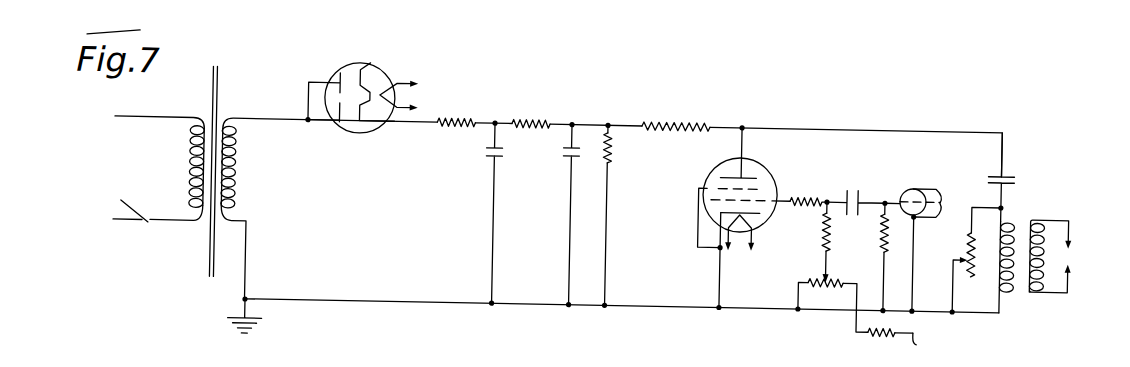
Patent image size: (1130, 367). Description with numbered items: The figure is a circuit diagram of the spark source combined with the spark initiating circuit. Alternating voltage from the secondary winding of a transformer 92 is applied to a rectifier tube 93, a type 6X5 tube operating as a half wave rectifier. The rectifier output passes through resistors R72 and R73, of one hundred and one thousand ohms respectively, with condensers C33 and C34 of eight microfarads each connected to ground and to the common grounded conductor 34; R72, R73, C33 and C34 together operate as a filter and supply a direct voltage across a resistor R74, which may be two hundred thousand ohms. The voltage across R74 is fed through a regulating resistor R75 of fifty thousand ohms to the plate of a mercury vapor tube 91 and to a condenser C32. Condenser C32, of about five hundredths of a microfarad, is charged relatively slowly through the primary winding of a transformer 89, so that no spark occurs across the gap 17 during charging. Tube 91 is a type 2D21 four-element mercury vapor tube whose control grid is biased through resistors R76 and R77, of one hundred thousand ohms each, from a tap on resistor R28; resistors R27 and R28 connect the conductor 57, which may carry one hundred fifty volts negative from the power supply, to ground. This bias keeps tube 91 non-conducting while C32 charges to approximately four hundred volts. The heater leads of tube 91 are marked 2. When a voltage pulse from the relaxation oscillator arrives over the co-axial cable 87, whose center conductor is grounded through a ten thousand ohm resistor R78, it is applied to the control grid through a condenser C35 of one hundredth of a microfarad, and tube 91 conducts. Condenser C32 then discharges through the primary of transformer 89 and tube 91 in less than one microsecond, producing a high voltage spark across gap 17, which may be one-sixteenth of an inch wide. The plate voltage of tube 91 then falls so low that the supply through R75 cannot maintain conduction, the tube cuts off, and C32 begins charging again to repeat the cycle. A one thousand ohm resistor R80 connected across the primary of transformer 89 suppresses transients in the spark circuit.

The transformer 92 is at (212, 156).
The rectifier tube 93 is at (358, 131).
The resistor R72 is at (456, 109).
The condenser C33 is at (484, 146).
The resistor R73 is at (531, 112).
The condenser C34 is at (555, 214).
The resistor R74 is at (625, 216).
The regulating resistor R75 is at (676, 117).
The mercury vapor tube 91 is at (769, 166).
The heater lead terminals 2 is at (739, 264).
The resistor R76 is at (808, 212).
The resistor R77 is at (843, 241).
The condenser C35 is at (856, 190).
The resistor R78 is at (898, 257).
The co-axial cable 87 is at (927, 173).
The condenser C32 is at (1021, 178).
The resistor R80 is at (968, 259).
The transformer 89 is at (1017, 272).
The gap 17 is at (1069, 232).
The conductor 34 is at (383, 298).
The resistor R28 is at (832, 305).
The resistor R27 is at (886, 342).
The conductor 57 is at (912, 350).